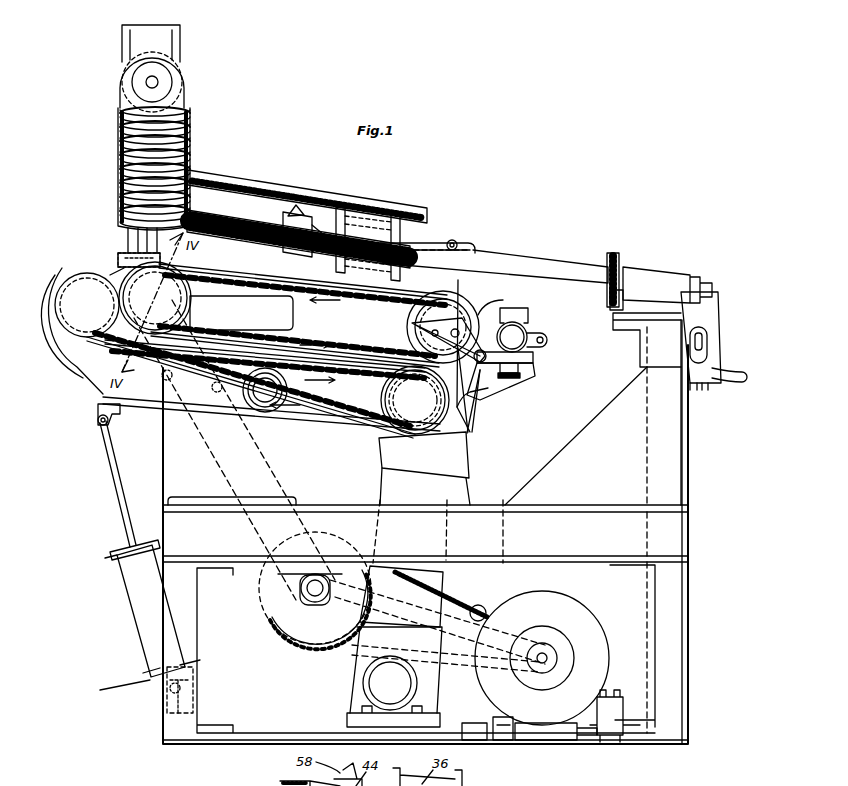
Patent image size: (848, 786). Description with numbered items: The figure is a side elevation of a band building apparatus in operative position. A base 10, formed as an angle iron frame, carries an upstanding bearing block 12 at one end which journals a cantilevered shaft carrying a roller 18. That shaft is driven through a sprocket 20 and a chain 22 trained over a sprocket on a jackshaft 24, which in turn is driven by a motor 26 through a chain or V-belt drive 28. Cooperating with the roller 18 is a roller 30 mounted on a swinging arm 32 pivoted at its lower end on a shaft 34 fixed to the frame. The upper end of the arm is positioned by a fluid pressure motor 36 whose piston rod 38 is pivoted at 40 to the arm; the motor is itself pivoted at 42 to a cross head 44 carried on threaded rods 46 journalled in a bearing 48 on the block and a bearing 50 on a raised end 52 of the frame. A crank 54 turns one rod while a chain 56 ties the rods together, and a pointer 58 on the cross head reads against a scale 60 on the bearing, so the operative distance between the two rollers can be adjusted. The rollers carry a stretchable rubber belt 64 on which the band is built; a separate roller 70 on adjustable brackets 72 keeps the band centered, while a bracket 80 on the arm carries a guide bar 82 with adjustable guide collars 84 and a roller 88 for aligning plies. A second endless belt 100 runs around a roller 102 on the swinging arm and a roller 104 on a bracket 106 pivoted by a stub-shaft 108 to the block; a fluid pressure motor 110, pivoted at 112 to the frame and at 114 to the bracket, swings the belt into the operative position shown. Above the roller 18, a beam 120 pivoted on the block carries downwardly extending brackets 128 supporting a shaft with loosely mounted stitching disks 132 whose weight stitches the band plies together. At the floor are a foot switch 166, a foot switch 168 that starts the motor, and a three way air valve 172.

The base 10 is at (700, 520).
The upstanding bearing block 12 is at (185, 442).
The roller 18 is at (120, 262).
The sprocket 20 is at (135, 280).
The chain 22 is at (300, 603).
The jackshaft 24 is at (312, 600).
The motor 26 is at (592, 650).
The chain or V-belt drive 28 is at (480, 607).
The roller 30 is at (460, 300).
The swinging arm 32 is at (470, 437).
The shaft 34 is at (380, 686).
The fluid pressure motor 36 is at (370, 218).
The piston rod 38 is at (436, 240).
The pivot 40 is at (458, 240).
The pivot 42 is at (338, 205).
The cross head 44 is at (295, 212).
The threaded rods 46 is at (563, 260).
The bearing 48 is at (135, 240).
The bearing 50 is at (653, 273).
The raised end 52 is at (684, 451).
The crank 54 is at (718, 338).
The chain 56 is at (614, 253).
The pointer 58 is at (300, 212).
The scale 60 is at (222, 173).
The stretchable rubber belt 64 is at (385, 305).
The roller 70 is at (490, 395).
The brackets 72 is at (460, 400).
The bracket 80 is at (515, 383).
The bar 82 is at (522, 334).
The adjustable guide collars 84 is at (518, 317).
The roller 88 is at (548, 345).
The second endless rotary means 100 is at (415, 420).
The roller 102 is at (468, 476).
The roller 104 is at (72, 290).
The bracket 106 is at (88, 390).
The stub-shaft 108 is at (280, 412).
The fluid pressure motor 110 is at (125, 608).
The pivot 112 is at (160, 700).
The pivot 114 is at (100, 428).
The beam 120 is at (178, 44).
The brackets 128 is at (165, 68).
The stitching disks 132 is at (188, 120).
The foot switch 166 is at (570, 740).
The foot switch 168 is at (482, 740).
The three way air valve 172 is at (610, 740).